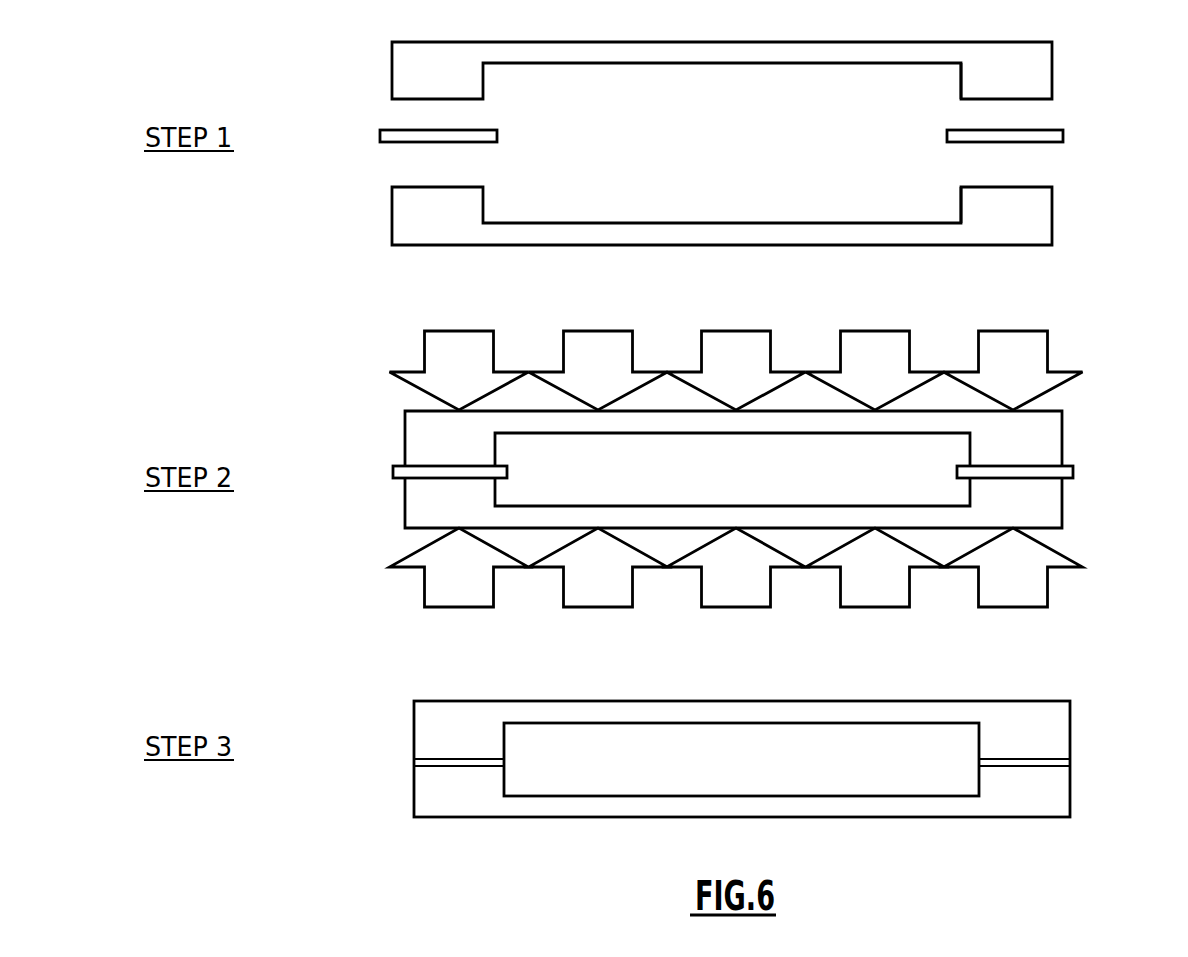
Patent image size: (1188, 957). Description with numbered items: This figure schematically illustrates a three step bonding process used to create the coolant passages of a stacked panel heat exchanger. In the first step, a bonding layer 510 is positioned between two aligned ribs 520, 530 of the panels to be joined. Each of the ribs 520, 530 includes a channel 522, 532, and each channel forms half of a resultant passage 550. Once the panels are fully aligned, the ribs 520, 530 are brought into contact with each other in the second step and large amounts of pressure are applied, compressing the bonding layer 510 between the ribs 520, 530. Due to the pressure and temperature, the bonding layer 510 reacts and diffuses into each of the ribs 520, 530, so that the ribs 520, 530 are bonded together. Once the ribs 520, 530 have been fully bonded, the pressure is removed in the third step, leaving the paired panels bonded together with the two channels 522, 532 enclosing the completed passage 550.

The bonding layer 510 is at (1067, 136).
The rib 520 is at (1035, 57).
The channel 522 is at (947, 82).
The rib 530 is at (1033, 222).
The channel 532 is at (947, 202).
The passage 550 is at (950, 758).